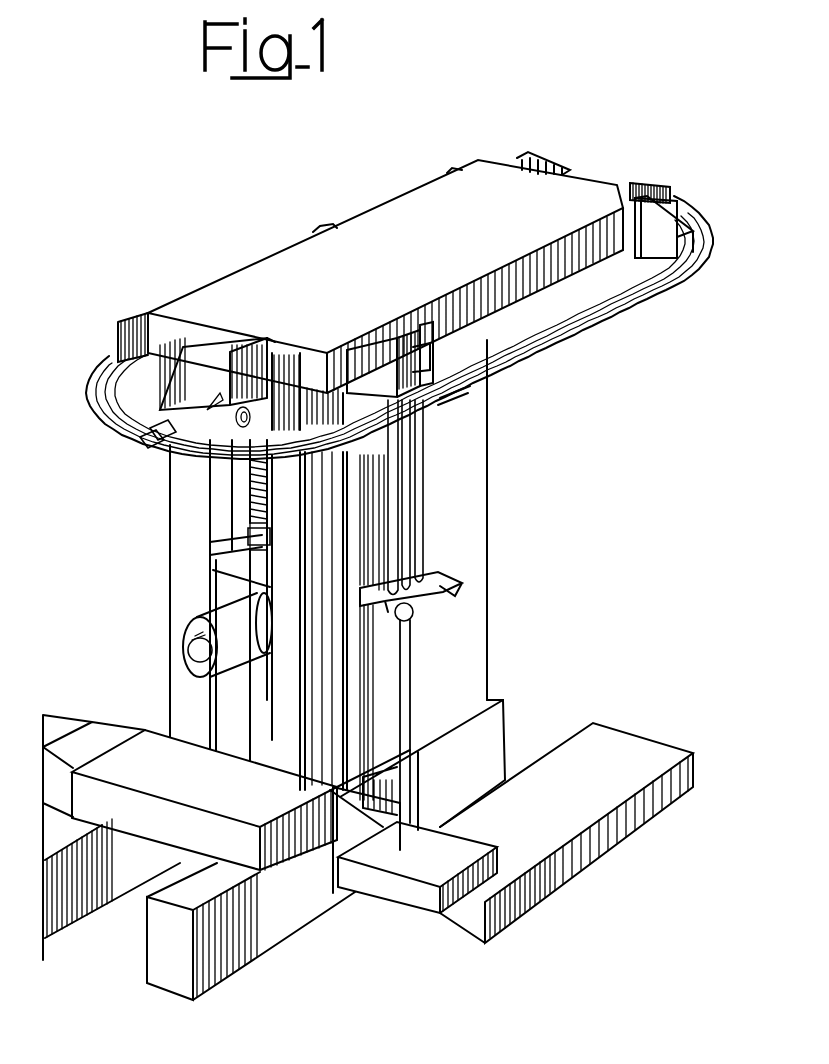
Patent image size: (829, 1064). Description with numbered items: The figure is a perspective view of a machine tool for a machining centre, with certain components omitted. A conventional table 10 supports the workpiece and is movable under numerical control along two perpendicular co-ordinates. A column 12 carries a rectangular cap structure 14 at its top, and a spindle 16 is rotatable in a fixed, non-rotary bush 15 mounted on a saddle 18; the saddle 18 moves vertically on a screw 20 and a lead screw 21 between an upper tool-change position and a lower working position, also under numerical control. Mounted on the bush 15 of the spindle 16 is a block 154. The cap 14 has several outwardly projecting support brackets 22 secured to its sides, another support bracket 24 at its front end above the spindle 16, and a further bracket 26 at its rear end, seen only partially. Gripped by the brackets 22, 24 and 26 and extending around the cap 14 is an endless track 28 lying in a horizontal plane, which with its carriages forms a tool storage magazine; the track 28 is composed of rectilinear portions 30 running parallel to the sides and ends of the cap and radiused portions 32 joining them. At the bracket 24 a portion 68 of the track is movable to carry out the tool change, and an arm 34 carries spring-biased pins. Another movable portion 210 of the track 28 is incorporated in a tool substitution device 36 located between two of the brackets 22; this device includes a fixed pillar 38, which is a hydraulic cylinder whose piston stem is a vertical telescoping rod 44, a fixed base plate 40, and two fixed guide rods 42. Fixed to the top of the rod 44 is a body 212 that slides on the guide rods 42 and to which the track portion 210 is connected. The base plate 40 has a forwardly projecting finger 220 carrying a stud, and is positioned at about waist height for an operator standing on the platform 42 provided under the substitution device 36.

The table 10 is at (270, 857).
The column 12 is at (474, 648).
The cap 14 is at (415, 215).
The bush 15 is at (188, 668).
The spindle 16 is at (190, 653).
The saddle 18 is at (228, 557).
The screw 20 is at (257, 510).
The lead screw 21 is at (259, 541).
The support brackets 22 is at (325, 229).
The support bracket 24 is at (232, 360).
The bracket 26 is at (645, 186).
The endless track 28 is at (563, 359).
The rectilinear portions 30 is at (600, 320).
The radiused portions 32 is at (716, 215).
The arm 34 is at (168, 460).
The tool substitution device 36 is at (452, 410).
The fixed pillar 38 is at (408, 688).
The fixed base plate 40 is at (418, 596).
The fixed guide rods 42 is at (427, 547).
The telescoping rod 44 is at (410, 520).
The movable track portion 68 is at (160, 434).
The block 154 is at (196, 638).
The movable track portion 210 is at (463, 401).
The body 212 is at (392, 335).
The finger 220 is at (445, 586).